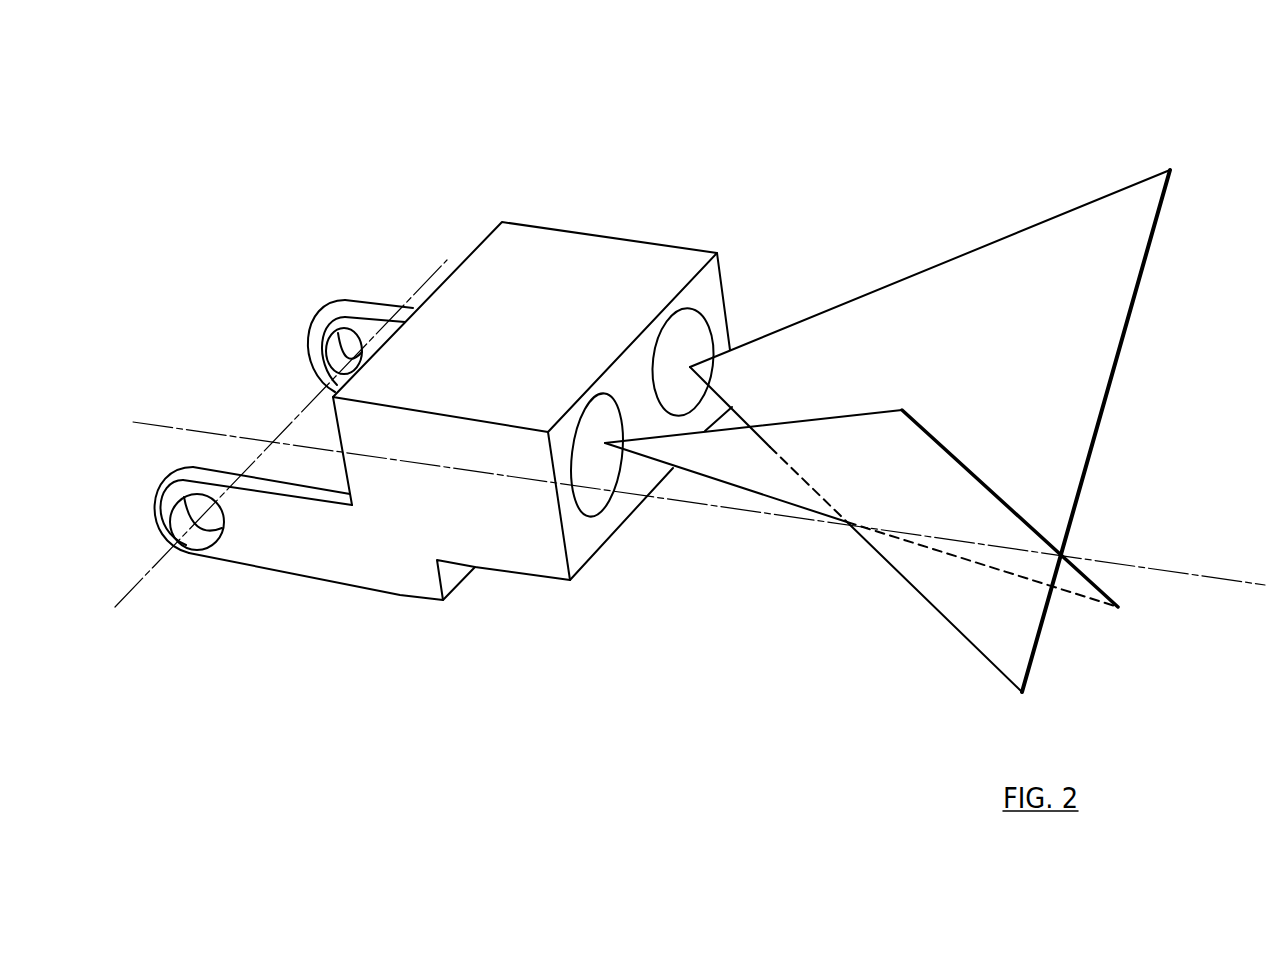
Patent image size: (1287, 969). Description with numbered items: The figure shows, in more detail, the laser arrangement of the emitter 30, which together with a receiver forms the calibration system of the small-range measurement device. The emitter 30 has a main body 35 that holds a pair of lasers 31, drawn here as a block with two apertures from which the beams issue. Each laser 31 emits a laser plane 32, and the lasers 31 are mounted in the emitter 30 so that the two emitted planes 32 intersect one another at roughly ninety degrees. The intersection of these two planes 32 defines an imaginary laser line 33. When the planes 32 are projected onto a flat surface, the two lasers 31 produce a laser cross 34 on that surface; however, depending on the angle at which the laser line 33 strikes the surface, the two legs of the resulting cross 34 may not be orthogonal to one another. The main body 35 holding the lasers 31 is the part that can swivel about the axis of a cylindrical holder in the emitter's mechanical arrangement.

The emitter 30 is at (905, 92).
The lasers 31 is at (687, 348).
The laser plane 32 is at (1027, 307).
The laser line 33 is at (990, 543).
The laser cross 34 is at (1108, 407).
The main body 35 is at (532, 300).